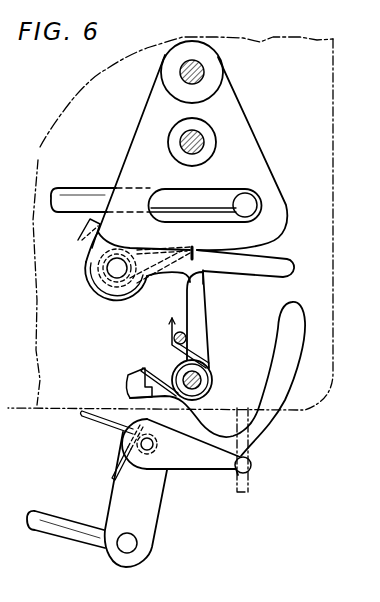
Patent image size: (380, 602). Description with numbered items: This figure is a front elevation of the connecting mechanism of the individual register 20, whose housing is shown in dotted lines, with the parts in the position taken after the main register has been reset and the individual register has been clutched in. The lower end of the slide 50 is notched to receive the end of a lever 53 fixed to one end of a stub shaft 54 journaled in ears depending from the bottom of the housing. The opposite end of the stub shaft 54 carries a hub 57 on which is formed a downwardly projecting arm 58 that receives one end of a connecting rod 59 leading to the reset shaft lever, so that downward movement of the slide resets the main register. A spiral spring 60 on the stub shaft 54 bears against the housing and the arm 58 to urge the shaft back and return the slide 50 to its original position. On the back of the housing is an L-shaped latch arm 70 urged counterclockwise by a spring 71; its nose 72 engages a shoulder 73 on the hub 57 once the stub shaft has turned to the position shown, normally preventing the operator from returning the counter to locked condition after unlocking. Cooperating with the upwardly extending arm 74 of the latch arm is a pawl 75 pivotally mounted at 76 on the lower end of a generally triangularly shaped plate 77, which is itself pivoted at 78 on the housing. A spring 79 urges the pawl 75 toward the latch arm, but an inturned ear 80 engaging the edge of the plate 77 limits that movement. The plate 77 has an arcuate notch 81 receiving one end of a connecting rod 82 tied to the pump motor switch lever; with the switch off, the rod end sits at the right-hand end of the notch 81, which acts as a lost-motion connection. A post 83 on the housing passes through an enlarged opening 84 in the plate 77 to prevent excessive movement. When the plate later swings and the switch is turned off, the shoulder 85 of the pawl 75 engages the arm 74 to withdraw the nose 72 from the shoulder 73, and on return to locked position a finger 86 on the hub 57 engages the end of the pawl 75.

The individual register 20 is at (333, 105).
The slide 50 is at (248, 487).
The lever 53 is at (212, 458).
The stub shaft 54 is at (140, 446).
The hub 57 is at (128, 417).
The downwardly projecting arm 58 is at (153, 513).
The connecting rod 59 is at (40, 512).
The spiral spring 60 is at (92, 420).
The L-shaped latch arm 70 is at (207, 325).
The spring 71 is at (200, 360).
The nose 72 is at (130, 390).
The shoulder 73 is at (163, 383).
The upwardly extending arm 74 is at (188, 298).
The pawl 75 is at (288, 258).
The pivot 76 is at (115, 268).
The triangularly shaped plate 77 is at (248, 107).
The pivot 78 is at (200, 72).
The spring 79 is at (193, 252).
The inturned ear 80 is at (78, 236).
The arcuate notch 81 is at (217, 195).
The connecting rod 82 is at (70, 193).
The post 83 is at (183, 145).
The enlarged opening 84 is at (173, 156).
The shoulder 85 is at (205, 270).
The finger 86 is at (297, 360).